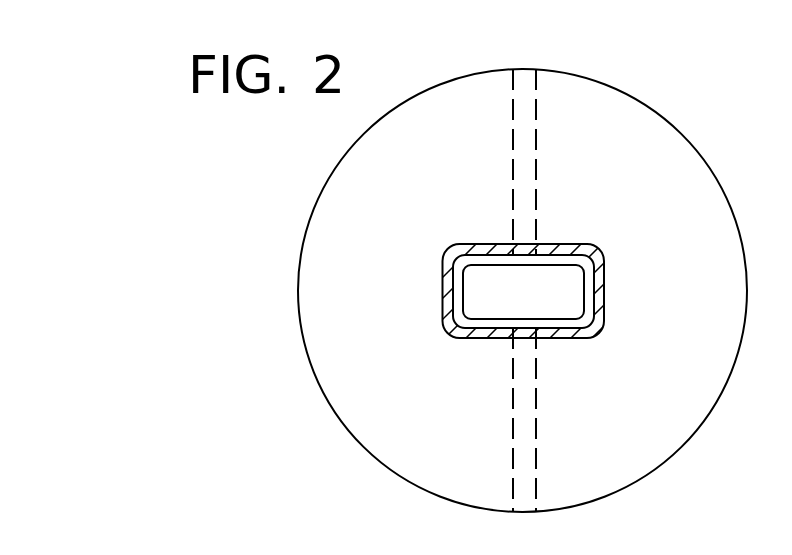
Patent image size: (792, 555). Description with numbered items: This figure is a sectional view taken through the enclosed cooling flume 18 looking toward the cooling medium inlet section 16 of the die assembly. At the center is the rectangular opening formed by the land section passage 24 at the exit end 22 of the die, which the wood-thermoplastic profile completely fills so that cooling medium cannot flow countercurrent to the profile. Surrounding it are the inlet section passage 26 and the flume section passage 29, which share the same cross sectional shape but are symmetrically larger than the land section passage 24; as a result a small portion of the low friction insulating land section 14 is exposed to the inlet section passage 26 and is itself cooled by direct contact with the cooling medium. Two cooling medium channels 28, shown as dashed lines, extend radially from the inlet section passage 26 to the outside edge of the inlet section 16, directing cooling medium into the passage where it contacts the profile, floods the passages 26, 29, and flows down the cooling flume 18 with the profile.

The low friction insulating land section 14 is at (563, 328).
The cooling medium inlet section 16 is at (677, 124).
The enclosed cooling flume 18 is at (568, 245).
The exit end 22 is at (487, 276).
The land section passage 24 is at (474, 260).
The inlet section passage 26 is at (481, 322).
The cooling medium channels 28 is at (537, 178).
The flume section passage 29 is at (467, 338).